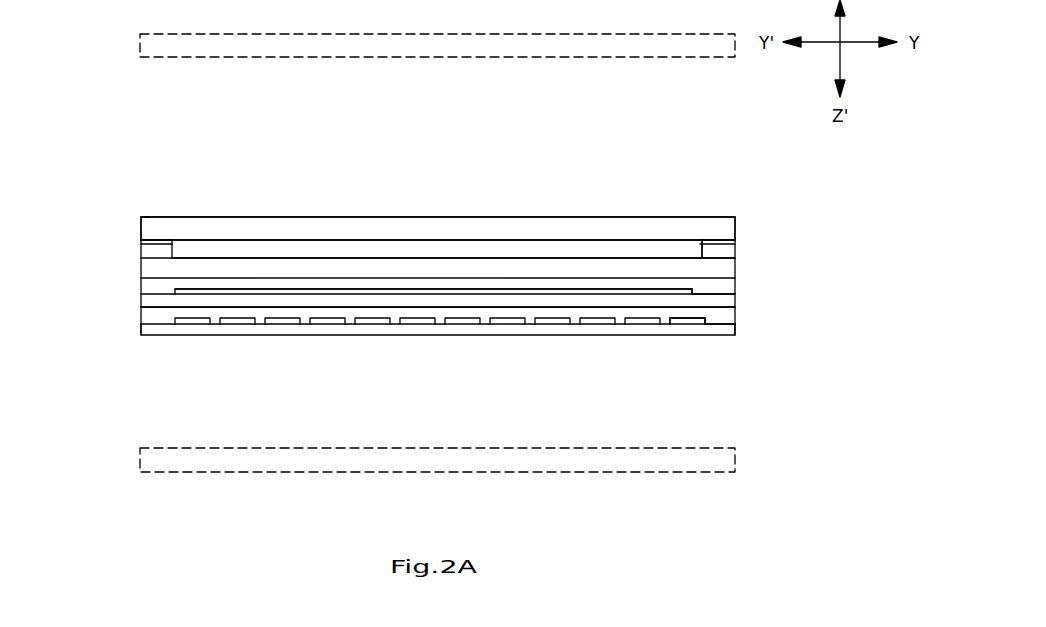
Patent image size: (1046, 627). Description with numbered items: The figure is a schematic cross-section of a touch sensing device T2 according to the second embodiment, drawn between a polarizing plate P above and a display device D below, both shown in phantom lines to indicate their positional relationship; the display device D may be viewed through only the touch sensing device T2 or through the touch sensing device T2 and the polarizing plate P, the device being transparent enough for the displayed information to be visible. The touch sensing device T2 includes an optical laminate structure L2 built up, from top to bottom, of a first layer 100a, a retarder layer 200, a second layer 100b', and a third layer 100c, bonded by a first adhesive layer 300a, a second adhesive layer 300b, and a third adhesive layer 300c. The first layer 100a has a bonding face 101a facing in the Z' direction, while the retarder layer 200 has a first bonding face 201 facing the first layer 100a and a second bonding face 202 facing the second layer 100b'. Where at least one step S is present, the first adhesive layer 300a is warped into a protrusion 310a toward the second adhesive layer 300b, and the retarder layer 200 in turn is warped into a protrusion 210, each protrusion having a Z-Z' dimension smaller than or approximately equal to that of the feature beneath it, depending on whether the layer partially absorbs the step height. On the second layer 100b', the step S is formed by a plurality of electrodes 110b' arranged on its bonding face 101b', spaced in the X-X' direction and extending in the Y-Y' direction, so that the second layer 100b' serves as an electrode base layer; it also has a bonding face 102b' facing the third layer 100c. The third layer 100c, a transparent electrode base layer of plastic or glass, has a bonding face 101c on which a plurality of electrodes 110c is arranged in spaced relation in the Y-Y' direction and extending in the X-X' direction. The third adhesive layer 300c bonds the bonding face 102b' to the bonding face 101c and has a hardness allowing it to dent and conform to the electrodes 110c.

The polarizing plate P is at (150, 43).
The display device D is at (150, 462).
The first layer 100a is at (141, 223).
The touch sensing device T2 is at (134, 209).
The step S is at (157, 240).
The protrusion 310a is at (157, 258).
The retarder layer 200 is at (157, 270).
The first bonding face 201 is at (283, 256).
The bonding face 101a is at (207, 237).
The second bonding face 202 is at (232, 278).
The protrusion 210 is at (157, 278).
The electrodes 110b' is at (433, 232).
The second layer 100b' is at (398, 300).
The electrodes 110c is at (377, 324).
The bonding face 101c is at (415, 324).
The bonding face 101b' is at (438, 351).
The bonding face 102b' is at (679, 351).
The third layer 100c is at (141, 327).
The optical laminate structure L2 is at (641, 217).
The first adhesive layer 300a is at (725, 248).
The second adhesive layer 300b is at (725, 285).
The third adhesive layer 300c is at (725, 315).